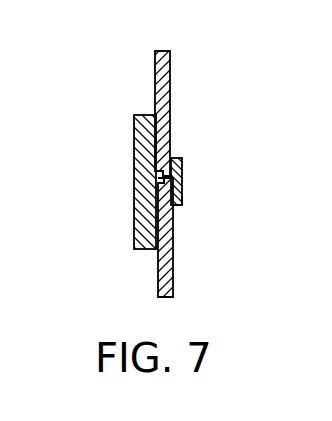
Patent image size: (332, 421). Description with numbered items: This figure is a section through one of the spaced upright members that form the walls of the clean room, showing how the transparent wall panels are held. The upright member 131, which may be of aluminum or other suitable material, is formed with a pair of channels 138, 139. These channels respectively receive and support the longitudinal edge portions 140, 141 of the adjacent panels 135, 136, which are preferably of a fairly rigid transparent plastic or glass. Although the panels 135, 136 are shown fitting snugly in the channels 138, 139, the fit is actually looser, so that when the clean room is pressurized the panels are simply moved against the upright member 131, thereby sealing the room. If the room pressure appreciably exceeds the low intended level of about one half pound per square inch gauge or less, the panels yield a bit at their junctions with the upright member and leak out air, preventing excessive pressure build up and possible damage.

The upright member 131 is at (132, 187).
The panel 135 is at (169, 75).
The panel 136 is at (172, 275).
The channel 138 is at (160, 171).
The channel 139 is at (161, 185).
The longitudinal edge portion 140 is at (172, 152).
The longitudinal edge portion 141 is at (176, 212).